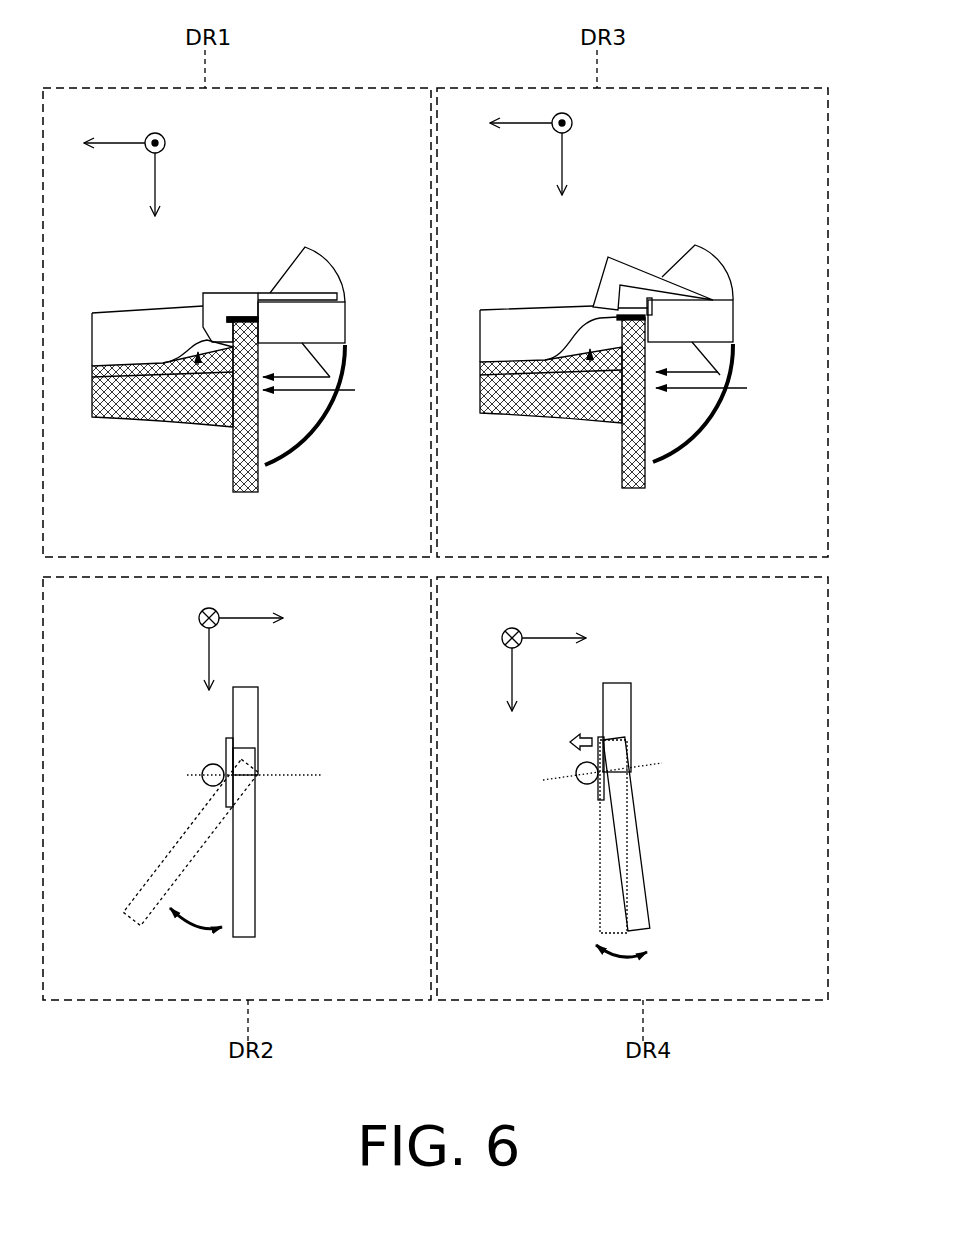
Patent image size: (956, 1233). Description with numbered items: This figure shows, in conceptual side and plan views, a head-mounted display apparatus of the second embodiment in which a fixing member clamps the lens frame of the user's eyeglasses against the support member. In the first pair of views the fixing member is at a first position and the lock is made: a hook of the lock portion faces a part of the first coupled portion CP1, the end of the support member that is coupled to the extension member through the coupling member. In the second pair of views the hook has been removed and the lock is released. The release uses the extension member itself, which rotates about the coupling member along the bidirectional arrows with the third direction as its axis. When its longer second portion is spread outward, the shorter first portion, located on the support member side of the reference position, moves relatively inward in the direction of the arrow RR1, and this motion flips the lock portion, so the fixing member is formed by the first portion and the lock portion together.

The first coupled portion CP1 is at (270, 320).
The arrow RR1 is at (583, 733).